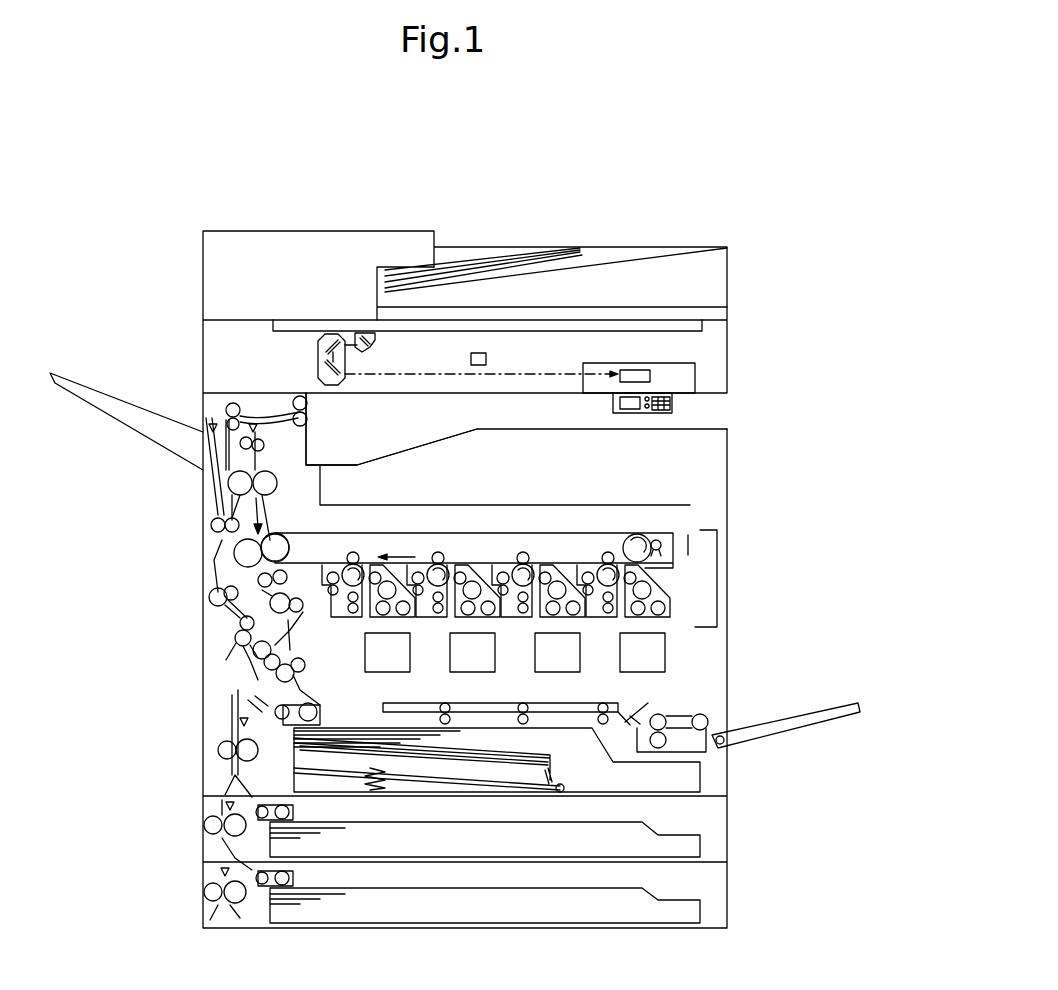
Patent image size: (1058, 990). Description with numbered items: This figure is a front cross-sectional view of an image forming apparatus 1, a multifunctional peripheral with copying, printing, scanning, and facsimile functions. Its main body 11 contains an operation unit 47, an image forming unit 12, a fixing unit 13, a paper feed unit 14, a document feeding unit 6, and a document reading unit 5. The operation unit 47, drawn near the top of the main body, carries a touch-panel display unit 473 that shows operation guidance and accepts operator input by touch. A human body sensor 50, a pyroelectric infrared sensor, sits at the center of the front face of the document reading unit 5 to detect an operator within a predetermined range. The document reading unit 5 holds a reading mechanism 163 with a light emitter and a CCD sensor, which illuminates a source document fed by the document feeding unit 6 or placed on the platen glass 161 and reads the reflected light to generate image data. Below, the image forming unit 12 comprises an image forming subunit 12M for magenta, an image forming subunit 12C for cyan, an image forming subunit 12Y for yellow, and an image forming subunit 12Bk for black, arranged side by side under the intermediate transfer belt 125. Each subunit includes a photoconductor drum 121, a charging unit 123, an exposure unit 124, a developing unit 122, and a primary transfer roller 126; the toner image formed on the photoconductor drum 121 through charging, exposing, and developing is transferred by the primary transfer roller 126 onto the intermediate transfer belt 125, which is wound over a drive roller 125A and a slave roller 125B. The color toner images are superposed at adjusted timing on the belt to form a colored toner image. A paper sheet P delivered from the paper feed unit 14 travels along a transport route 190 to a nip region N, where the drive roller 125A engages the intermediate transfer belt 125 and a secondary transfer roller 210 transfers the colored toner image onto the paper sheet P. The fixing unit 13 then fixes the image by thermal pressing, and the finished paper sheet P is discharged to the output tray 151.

The image forming apparatus 1 is at (803, 298).
The document reading unit 5 is at (182, 349).
The document feeding unit 6 is at (581, 228).
The main body 11 is at (731, 490).
The image forming unit 12 is at (727, 550).
The fixing unit 13 is at (221, 483).
The paper feed unit 14 is at (711, 826).
The operation unit 47 is at (678, 415).
The human body sensor 50 is at (487, 358).
The photoconductor drum 121 is at (610, 582).
The developing unit 122 is at (652, 580).
The charging unit 123 is at (592, 612).
The exposure unit 124 is at (665, 650).
The intermediate transfer belt 125 is at (488, 524).
The drive roller 125A is at (290, 518).
The slave roller 125B is at (655, 542).
The primary transfer roller 126 is at (602, 552).
The output tray 151 is at (343, 463).
The platen glass 161 is at (598, 325).
The reading mechanism 163 is at (296, 357).
The transport route 190 is at (240, 548).
The secondary transfer roller 210 is at (250, 567).
The display unit 473 is at (613, 403).
The image forming subunit for black 12Bk is at (359, 546).
The image forming subunit for yellow 12Y is at (443, 545).
The image forming subunit for cyan 12C is at (528, 546).
The image forming subunit for magenta 12M is at (639, 577).
The nip region N is at (250, 520).
The paper sheet P is at (535, 745).